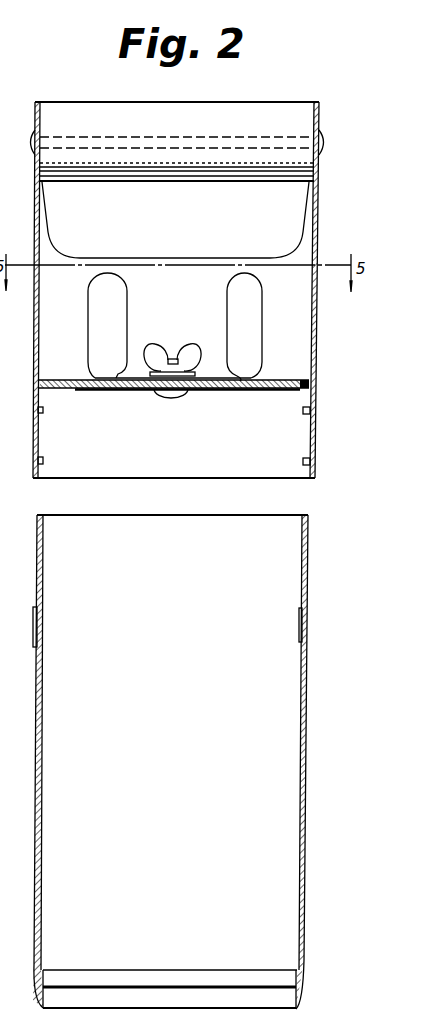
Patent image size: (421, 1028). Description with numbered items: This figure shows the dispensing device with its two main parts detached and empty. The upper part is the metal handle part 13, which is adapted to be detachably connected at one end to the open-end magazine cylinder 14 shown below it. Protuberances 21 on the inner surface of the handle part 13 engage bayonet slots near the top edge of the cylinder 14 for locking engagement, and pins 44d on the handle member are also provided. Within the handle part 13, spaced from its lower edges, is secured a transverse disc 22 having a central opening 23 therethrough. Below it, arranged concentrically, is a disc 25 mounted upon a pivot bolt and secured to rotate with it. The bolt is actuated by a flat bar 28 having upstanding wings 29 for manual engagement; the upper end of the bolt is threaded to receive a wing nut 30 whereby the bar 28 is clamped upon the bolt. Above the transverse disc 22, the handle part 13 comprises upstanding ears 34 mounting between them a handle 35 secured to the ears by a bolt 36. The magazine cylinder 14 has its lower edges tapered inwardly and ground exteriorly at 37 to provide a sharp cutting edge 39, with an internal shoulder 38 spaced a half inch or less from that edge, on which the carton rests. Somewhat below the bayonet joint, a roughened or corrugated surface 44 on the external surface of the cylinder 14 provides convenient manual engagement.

The handle part 13 is at (319, 353).
The open-end cylinder 14 is at (308, 700).
The protuberances 21 is at (303, 466).
The transverse disc 22 is at (304, 379).
The central opening 23 is at (161, 393).
The disc 25 is at (265, 392).
The flat bar 28 is at (224, 380).
The upstanding wings 29 is at (238, 300).
The wing nut 30 is at (165, 340).
The upstanding ears 34 is at (320, 194).
The handle 35 is at (283, 114).
The bolt 36 is at (283, 137).
The ground exterior portion 37 is at (302, 1000).
The internal shoulder 38 is at (297, 970).
The sharp cutting edge 39 is at (300, 1010).
The roughened or corrugated surface 44 is at (308, 633).
The pins 44d is at (302, 412).